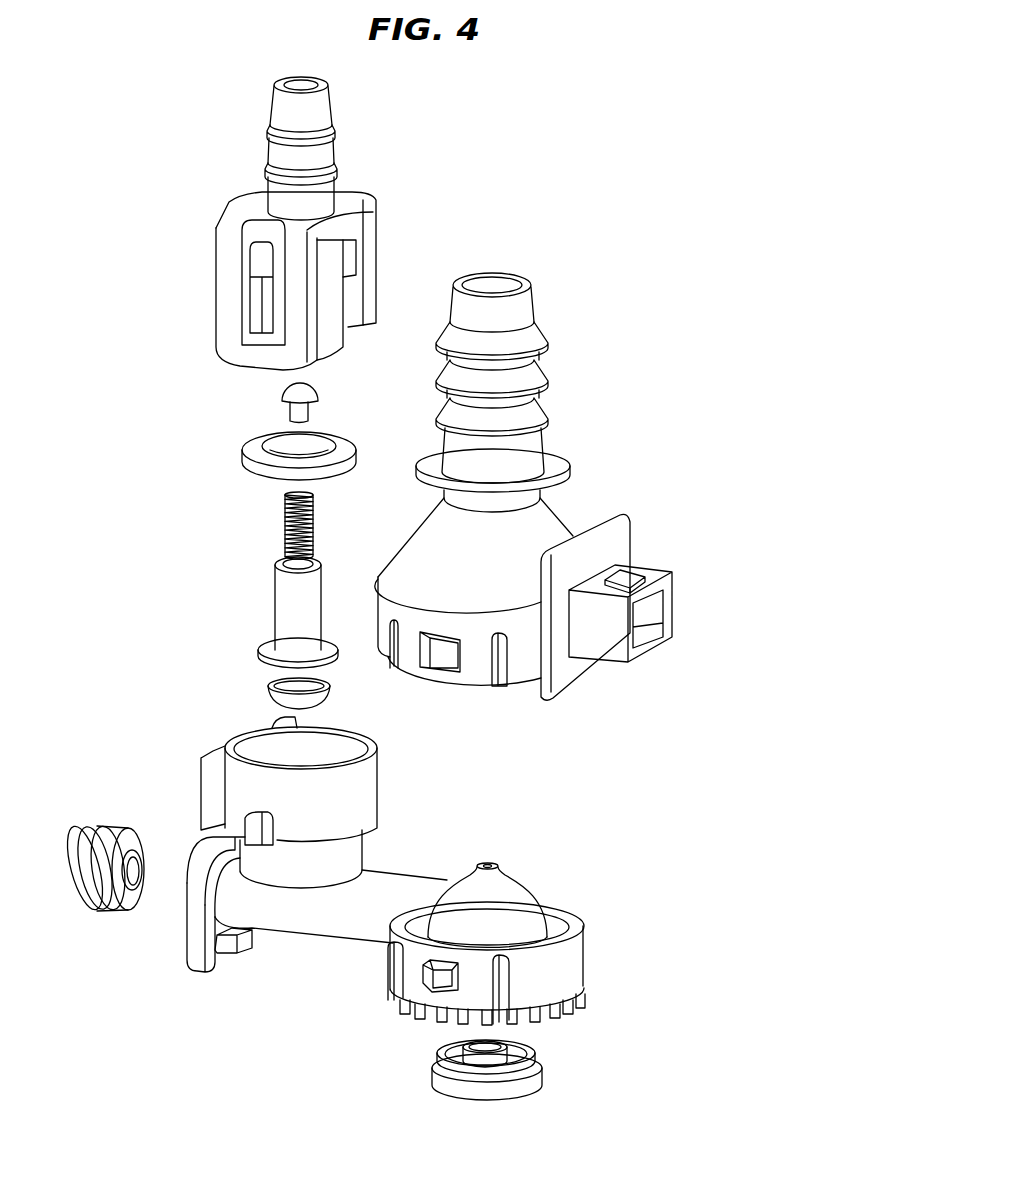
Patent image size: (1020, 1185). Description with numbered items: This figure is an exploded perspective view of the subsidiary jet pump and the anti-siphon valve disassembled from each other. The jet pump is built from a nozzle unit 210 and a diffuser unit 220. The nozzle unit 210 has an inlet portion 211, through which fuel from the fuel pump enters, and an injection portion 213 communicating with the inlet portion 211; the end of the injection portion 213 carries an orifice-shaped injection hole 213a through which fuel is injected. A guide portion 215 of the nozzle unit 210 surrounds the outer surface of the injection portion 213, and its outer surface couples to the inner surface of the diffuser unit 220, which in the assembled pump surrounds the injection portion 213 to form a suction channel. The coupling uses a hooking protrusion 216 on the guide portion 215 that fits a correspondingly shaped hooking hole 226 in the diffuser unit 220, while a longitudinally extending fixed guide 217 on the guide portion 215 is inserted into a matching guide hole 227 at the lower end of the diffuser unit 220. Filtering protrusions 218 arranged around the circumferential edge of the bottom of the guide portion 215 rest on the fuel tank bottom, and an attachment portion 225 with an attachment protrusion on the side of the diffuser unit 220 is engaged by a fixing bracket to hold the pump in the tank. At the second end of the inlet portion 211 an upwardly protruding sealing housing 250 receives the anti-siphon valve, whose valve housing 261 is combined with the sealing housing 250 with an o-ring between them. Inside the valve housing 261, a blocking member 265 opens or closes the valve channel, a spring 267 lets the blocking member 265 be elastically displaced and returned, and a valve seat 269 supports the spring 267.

The nozzle unit 210 is at (444, 946).
The inlet portion 211 is at (320, 935).
The injection portion 213 is at (537, 872).
The injection hole 213a is at (487, 862).
The guide portion 215 is at (514, 998).
The hooking protrusion 216 is at (432, 985).
The fixed guide 217 is at (505, 985).
The filtering protrusions 218 is at (580, 1003).
The diffuser unit 220 is at (595, 526).
The attachment portion 225 is at (673, 600).
The hooking hole 226 is at (443, 660).
The guide hole 227 is at (499, 675).
The sealing housing 250 is at (232, 740).
The valve housing 261 is at (245, 205).
The blocking member 265 is at (283, 391).
The spring 267 is at (287, 514).
The valve seat 269 is at (290, 600).